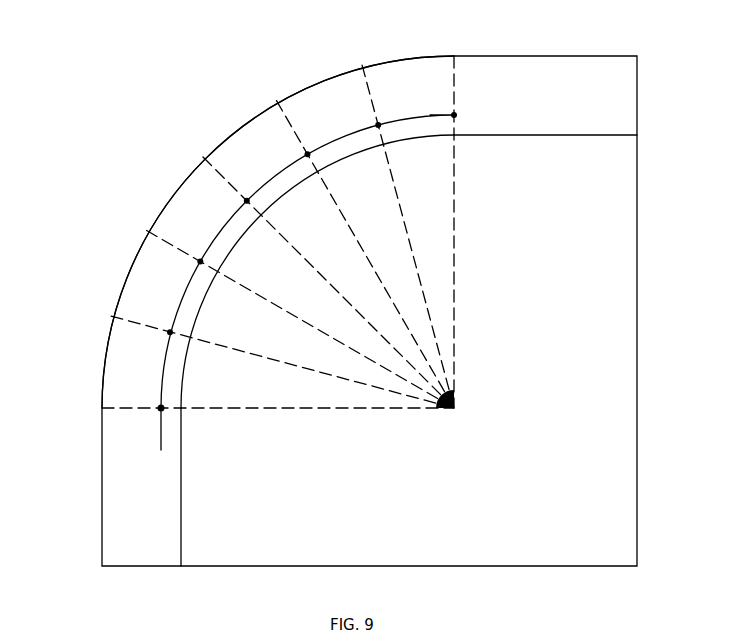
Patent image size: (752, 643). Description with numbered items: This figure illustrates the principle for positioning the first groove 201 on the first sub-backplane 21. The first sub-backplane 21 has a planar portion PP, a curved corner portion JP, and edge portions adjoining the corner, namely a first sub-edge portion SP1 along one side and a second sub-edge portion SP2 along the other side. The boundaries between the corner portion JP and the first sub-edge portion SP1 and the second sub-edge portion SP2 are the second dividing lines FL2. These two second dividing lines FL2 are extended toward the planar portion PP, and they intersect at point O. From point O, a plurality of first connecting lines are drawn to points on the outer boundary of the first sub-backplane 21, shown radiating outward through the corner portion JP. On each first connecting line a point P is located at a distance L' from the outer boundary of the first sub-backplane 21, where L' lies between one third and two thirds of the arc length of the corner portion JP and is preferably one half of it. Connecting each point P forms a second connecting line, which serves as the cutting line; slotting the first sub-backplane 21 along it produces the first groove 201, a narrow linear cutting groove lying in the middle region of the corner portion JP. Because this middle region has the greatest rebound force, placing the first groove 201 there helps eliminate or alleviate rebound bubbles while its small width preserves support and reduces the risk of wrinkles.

The first sub-backplane 21 is at (592, 328).
The corner portion JP is at (270, 140).
The planar portion PP is at (593, 213).
The first sub-edge portion SP1 is at (148, 517).
The second sub-edge portion SP2 is at (593, 103).
The first groove 201 is at (218, 225).
The second dividing line FL2 is at (453, 87).
The point P is at (160, 406).
The point O is at (459, 408).